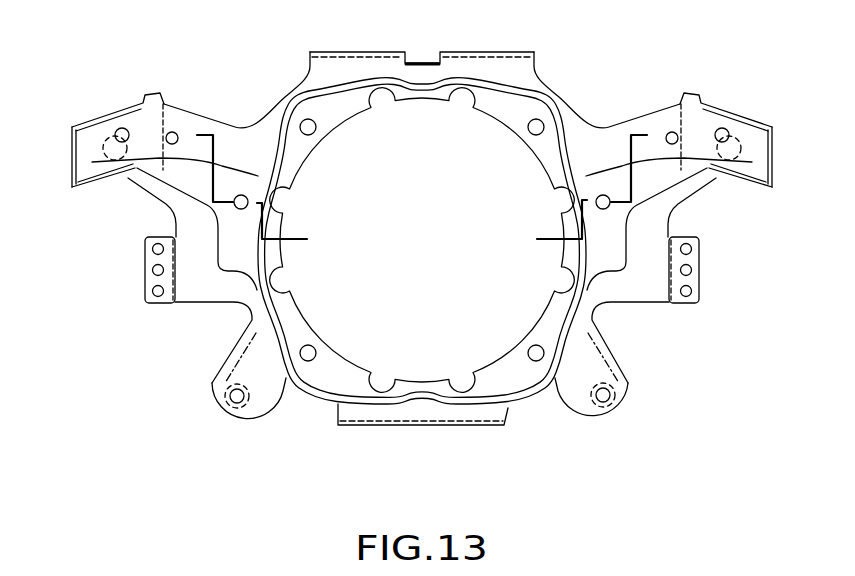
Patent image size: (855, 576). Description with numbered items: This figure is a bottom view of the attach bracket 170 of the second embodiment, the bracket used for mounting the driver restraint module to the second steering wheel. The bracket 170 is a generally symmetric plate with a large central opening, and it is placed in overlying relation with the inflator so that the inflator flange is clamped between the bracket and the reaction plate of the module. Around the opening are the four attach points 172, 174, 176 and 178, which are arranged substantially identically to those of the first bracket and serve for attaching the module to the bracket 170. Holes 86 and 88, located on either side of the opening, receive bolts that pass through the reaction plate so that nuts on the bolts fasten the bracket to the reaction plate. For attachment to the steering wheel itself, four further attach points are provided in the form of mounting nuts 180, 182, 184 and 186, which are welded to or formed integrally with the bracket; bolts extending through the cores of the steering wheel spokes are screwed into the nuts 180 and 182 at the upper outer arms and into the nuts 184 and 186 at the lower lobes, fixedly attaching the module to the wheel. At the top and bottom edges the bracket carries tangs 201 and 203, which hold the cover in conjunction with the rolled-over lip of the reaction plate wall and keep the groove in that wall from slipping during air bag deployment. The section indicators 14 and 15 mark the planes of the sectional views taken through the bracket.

The section line 14- 14 is at (422, 52).
The section line 15- 15 is at (65, 137).
The hole 86 is at (241, 195).
The hole 88 is at (603, 195).
The attach bracket 170 is at (497, 65).
The attach point 172 is at (540, 119).
The attach point 174 is at (302, 120).
The attach point 176 is at (533, 361).
The attach point 178 is at (307, 361).
The mounting nut 180 is at (724, 129).
The mounting nut 182 is at (120, 129).
The mounting nut 184 is at (618, 393).
The mounting nut 186 is at (210, 383).
The tang 201 is at (456, 52).
The tang 203 is at (397, 427).